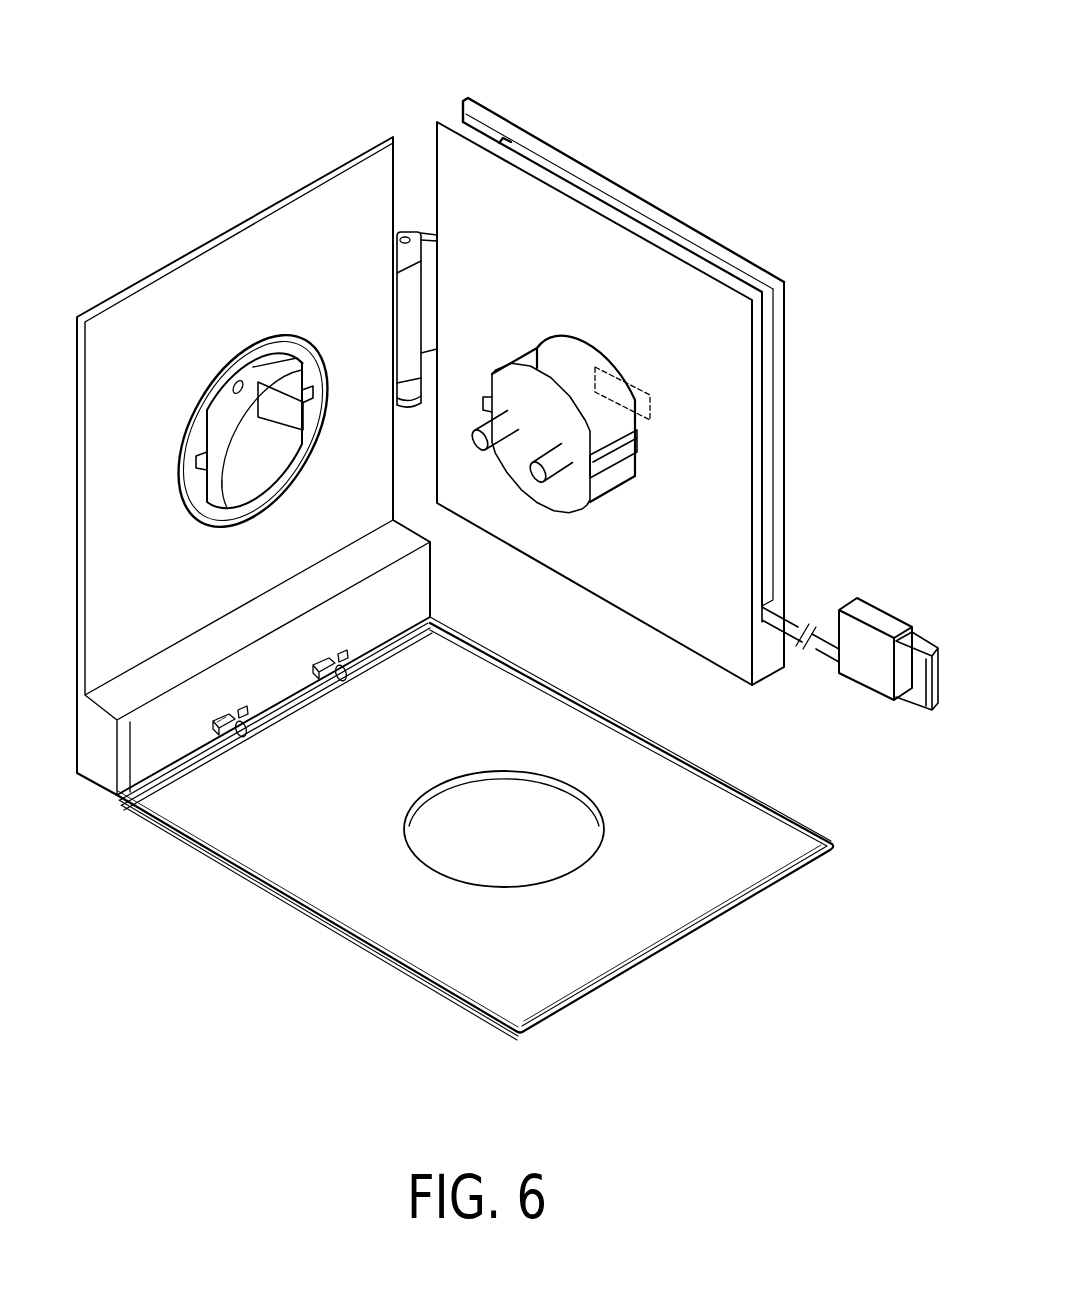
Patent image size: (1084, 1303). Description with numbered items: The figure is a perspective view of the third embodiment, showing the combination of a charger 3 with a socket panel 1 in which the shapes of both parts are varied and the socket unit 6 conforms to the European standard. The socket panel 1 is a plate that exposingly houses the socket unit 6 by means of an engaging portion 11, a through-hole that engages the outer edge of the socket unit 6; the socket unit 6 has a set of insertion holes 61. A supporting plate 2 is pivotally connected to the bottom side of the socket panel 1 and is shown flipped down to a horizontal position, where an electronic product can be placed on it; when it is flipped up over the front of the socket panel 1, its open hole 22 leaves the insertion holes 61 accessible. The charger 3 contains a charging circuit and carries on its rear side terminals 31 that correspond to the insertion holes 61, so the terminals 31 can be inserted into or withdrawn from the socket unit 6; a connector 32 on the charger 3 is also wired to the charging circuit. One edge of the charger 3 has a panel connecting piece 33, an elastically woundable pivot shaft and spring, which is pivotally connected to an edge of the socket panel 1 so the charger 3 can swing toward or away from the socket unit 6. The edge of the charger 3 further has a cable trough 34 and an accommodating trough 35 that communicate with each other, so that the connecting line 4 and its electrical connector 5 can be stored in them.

The socket panel 1 is at (115, 293).
The engaging portion 11 is at (268, 340).
The socket unit 6 is at (183, 417).
The insertion holes 61 is at (262, 463).
The supporting plate 2 is at (785, 808).
The open hole 22 is at (585, 828).
The charger 3 is at (748, 262).
The terminals 31 is at (555, 473).
The connector 32 is at (652, 408).
The panel connecting piece 33 is at (408, 296).
The cable trough 34 is at (775, 484).
The accommodating trough 35 is at (492, 132).
The connecting line 4 is at (827, 632).
The electrical connector 5 is at (892, 610).